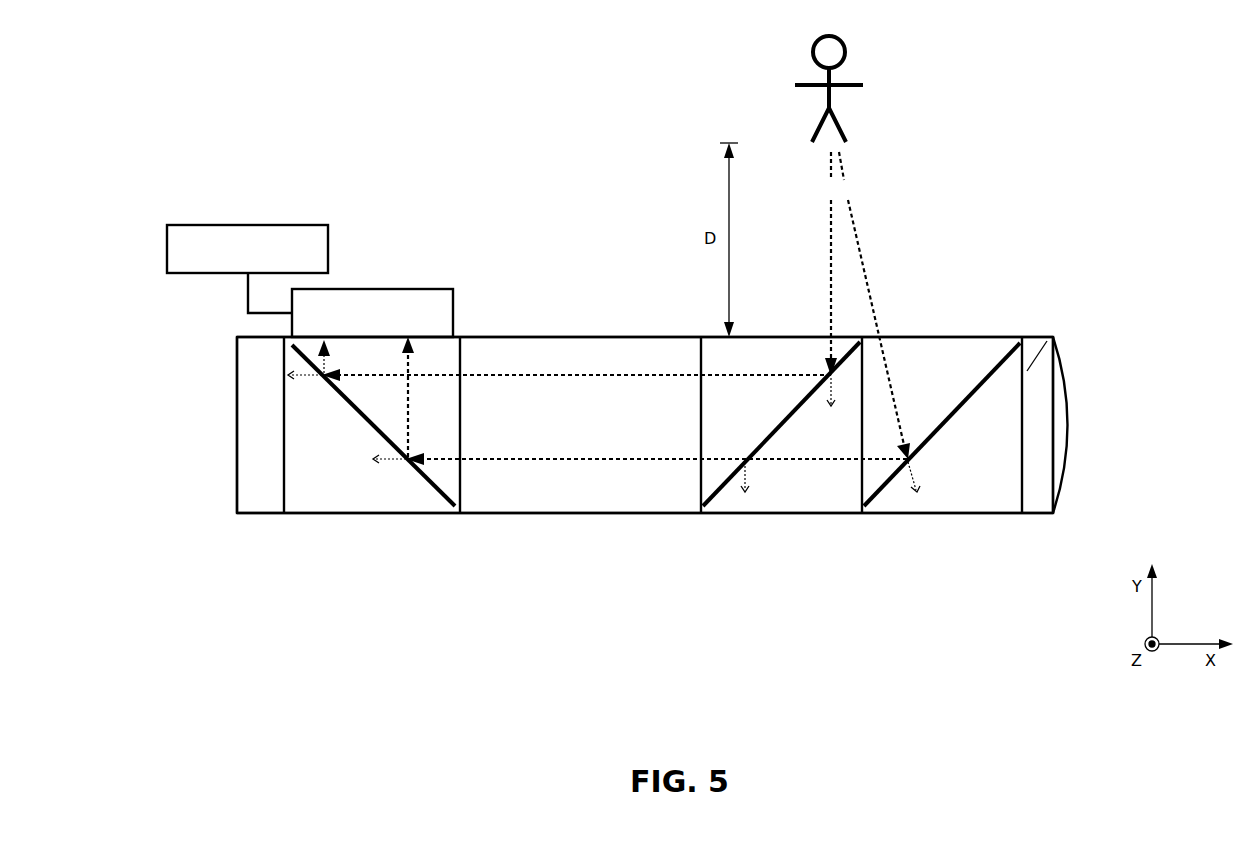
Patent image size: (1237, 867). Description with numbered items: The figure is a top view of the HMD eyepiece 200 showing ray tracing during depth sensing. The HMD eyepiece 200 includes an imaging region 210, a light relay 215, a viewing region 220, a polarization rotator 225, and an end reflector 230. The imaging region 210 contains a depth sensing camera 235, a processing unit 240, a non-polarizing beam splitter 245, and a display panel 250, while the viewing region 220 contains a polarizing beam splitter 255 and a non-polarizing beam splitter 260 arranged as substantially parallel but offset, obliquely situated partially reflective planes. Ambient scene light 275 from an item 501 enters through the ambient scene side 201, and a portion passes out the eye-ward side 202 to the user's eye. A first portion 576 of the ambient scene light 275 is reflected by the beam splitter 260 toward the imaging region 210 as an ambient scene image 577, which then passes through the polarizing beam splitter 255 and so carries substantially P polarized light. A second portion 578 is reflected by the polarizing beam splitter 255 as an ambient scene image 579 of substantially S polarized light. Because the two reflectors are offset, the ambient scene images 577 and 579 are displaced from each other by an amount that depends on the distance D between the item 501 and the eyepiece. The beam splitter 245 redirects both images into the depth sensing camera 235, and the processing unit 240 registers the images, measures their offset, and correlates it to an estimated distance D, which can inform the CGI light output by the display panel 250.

The HMD eyepiece 200 is at (266, 68).
The ambient scene side 201 is at (603, 255).
The eye-ward side 202 is at (630, 570).
The imaging region 210 is at (460, 590).
The light relay 215 is at (490, 337).
The viewing region 220 is at (1024, 590).
The polarization rotator 225 is at (1040, 337).
The end reflector 230 is at (1072, 410).
The depth sensing camera 235 is at (372, 313).
The processing unit 240 is at (247, 269).
The non-polarizing beam splitter 245 is at (433, 492).
The display panel 250 is at (237, 389).
The polarizing beam splitter 255 is at (725, 490).
The non-polarizing beam splitter 260 is at (995, 366).
The ambient scene light 275 is at (903, 194).
The item 501 is at (847, 50).
The first portion of ambient scene light 576 is at (867, 283).
The ambient scene image 577 is at (656, 459).
The second portion of ambient scene light 578 is at (831, 252).
The ambient scene image 579 is at (640, 375).